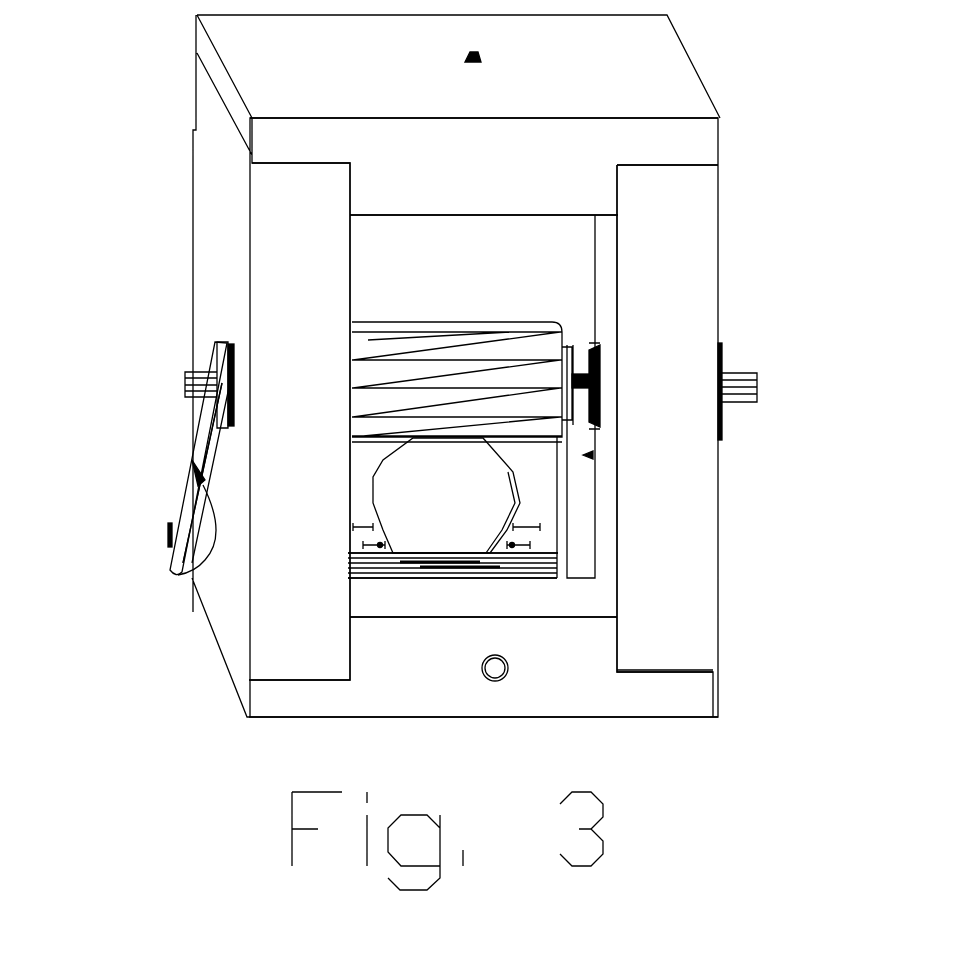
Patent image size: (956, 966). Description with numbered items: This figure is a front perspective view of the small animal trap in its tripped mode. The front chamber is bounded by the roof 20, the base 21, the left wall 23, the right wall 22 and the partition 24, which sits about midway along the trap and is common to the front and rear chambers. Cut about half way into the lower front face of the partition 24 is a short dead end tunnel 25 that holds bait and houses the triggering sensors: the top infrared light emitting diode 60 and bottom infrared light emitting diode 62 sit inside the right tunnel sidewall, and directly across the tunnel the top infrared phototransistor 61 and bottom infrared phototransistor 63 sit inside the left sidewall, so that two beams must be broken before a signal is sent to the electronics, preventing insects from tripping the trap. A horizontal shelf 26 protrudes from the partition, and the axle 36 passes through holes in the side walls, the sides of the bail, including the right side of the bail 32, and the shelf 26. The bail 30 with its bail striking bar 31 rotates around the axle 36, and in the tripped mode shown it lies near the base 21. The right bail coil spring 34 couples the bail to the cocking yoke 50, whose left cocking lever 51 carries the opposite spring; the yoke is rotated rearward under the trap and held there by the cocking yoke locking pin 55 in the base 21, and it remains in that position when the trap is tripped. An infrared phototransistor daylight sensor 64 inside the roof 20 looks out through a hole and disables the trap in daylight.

The roof 20 is at (542, 158).
The base 21 is at (363, 631).
The right wall 22 is at (627, 223).
The left wall 23 is at (307, 400).
The partition 24 is at (355, 251).
The short dead end tunnel 25 is at (439, 502).
The shelf 26 is at (383, 373).
The bail 30 is at (593, 455).
The bail striking bar 31 is at (525, 578).
The right side of the bail 32 is at (567, 560).
The right bail coil spring 34 is at (603, 400).
The axle 36 is at (33, 382).
The cocking yoke 50 is at (185, 566).
The left cocking lever 51 is at (85, 433).
The cocking yoke locking pin 55 is at (505, 672).
The top infrared light emitting diode 60 is at (513, 527).
The top infrared phototransistor 61 is at (352, 528).
The bottom infrared light emitting diode 62 is at (530, 542).
The bottom infrared phototransistor 63 is at (350, 587).
The infrared phototransistor daylight sensor 64 is at (467, 60).